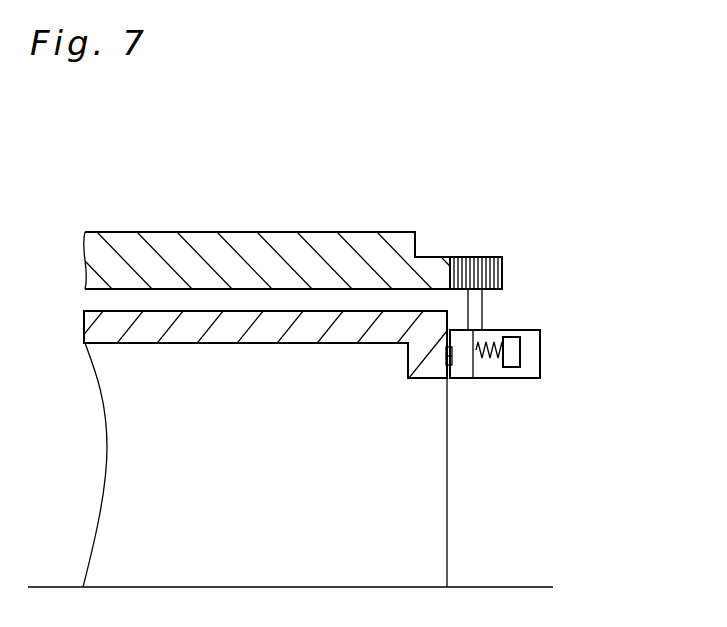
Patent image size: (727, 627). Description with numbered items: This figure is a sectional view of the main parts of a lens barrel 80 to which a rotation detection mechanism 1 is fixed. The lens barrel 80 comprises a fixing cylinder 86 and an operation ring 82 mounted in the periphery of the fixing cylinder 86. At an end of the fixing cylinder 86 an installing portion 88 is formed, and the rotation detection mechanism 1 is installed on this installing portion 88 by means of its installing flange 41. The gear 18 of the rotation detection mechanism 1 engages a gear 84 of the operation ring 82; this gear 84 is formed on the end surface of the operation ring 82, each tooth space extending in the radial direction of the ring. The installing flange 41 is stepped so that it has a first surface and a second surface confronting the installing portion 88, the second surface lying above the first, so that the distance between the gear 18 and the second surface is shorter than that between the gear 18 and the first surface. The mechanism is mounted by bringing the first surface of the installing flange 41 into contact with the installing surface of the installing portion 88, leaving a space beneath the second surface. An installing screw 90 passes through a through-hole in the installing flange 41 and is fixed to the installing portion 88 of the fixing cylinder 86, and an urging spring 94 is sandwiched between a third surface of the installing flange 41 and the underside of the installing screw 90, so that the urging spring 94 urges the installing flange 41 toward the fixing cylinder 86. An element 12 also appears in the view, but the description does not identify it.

The rotation detection mechanism 1 is at (527, 373).
The rod 12 is at (483, 311).
The gear 18 is at (502, 275).
The installing flange 41 is at (459, 375).
The lens barrel 80 is at (264, 217).
The operation ring 82 is at (289, 232).
The gear 84 is at (472, 258).
The fixing cylinder 86 is at (295, 345).
The installing portion 88 is at (426, 378).
The installing screw 90 is at (512, 368).
The urging spring 94 is at (490, 356).